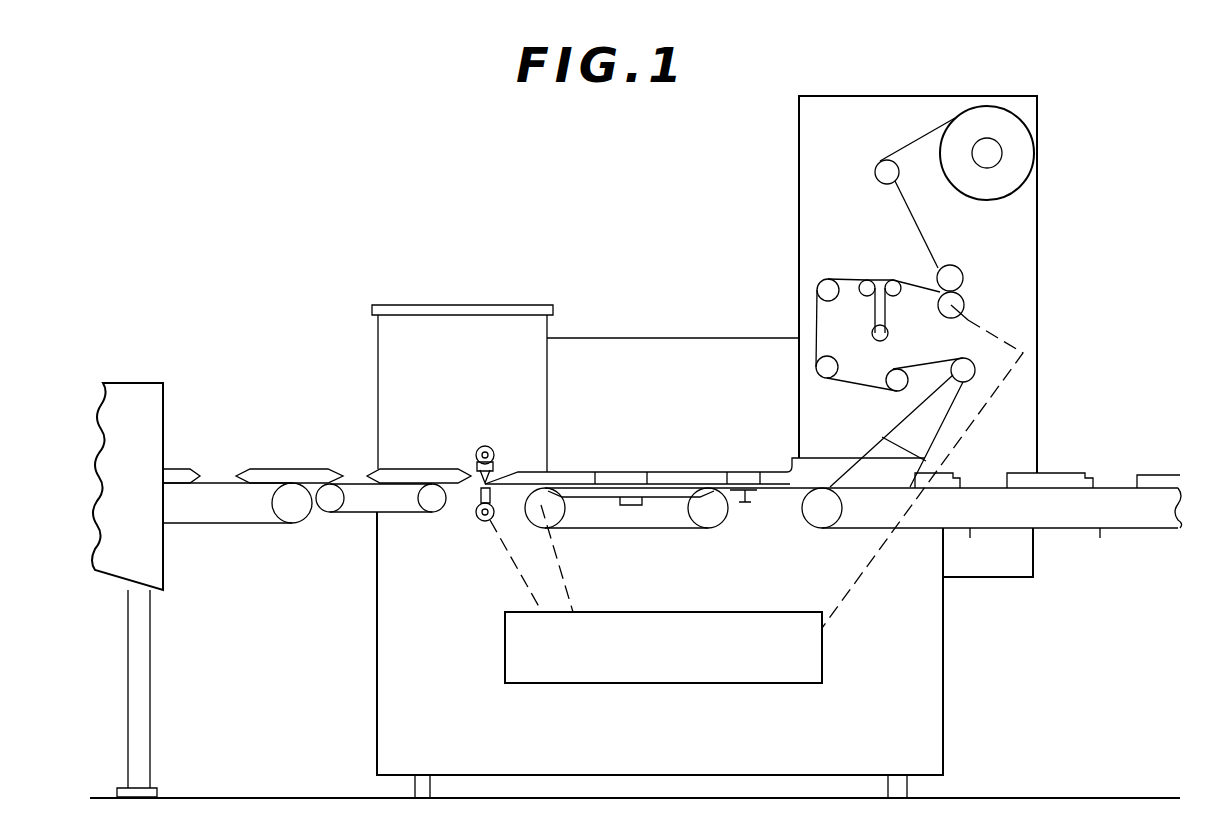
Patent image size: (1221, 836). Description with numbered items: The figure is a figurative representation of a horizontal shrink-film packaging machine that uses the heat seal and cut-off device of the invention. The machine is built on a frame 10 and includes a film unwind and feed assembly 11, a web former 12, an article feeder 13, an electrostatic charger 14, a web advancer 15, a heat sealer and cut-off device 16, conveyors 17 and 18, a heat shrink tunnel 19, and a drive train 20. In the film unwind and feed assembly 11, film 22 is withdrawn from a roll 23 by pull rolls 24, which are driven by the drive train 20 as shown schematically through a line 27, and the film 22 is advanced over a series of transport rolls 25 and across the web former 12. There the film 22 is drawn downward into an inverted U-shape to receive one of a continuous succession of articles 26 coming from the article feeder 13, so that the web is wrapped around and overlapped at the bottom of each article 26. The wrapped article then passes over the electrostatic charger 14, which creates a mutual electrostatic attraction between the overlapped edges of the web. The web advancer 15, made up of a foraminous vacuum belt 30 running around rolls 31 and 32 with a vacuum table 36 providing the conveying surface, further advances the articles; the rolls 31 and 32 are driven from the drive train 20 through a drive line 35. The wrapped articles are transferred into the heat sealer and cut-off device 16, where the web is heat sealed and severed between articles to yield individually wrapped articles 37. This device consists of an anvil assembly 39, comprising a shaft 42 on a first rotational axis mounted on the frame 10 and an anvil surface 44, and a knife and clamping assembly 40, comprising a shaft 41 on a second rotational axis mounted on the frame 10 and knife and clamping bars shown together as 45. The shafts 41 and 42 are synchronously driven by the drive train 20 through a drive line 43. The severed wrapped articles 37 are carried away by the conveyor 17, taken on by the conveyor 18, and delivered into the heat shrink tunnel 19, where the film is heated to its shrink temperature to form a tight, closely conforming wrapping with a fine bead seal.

The frame 10 is at (948, 657).
The film unwind and feed assembly 11 is at (1046, 246).
The web former 12 is at (866, 452).
The article feeder 13 is at (1105, 484).
The electrostatic charger 14 is at (753, 498).
The web advancer 15 is at (654, 528).
The heat sealer and cut-off device 16 is at (479, 481).
The conveyor 17 is at (356, 514).
The conveyor 18 is at (230, 526).
The heat shrink tunnel 19 is at (147, 484).
The drive train 20 is at (667, 659).
The film 22 is at (884, 182).
The roll 23 is at (1034, 130).
The pull rolls 24 is at (966, 291).
The transport rolls 25 is at (836, 276).
The articles 26 is at (957, 479).
The line 27 is at (986, 395).
The foraminous vacuum belt 30 is at (604, 528).
The roll 31 is at (541, 506).
The roll 32 is at (710, 522).
The drive line 35 is at (564, 566).
The vacuum table 36 is at (578, 497).
The wrapped articles 37 is at (184, 464).
The anvil assembly 39 is at (485, 524).
The knife and clamping assembly 40 is at (494, 450).
The shaft 41 is at (477, 455).
The shaft 42 is at (480, 521).
The drive line 43 is at (520, 566).
The anvil surface 44 is at (470, 491).
The knife and clamping bars 45 is at (491, 475).